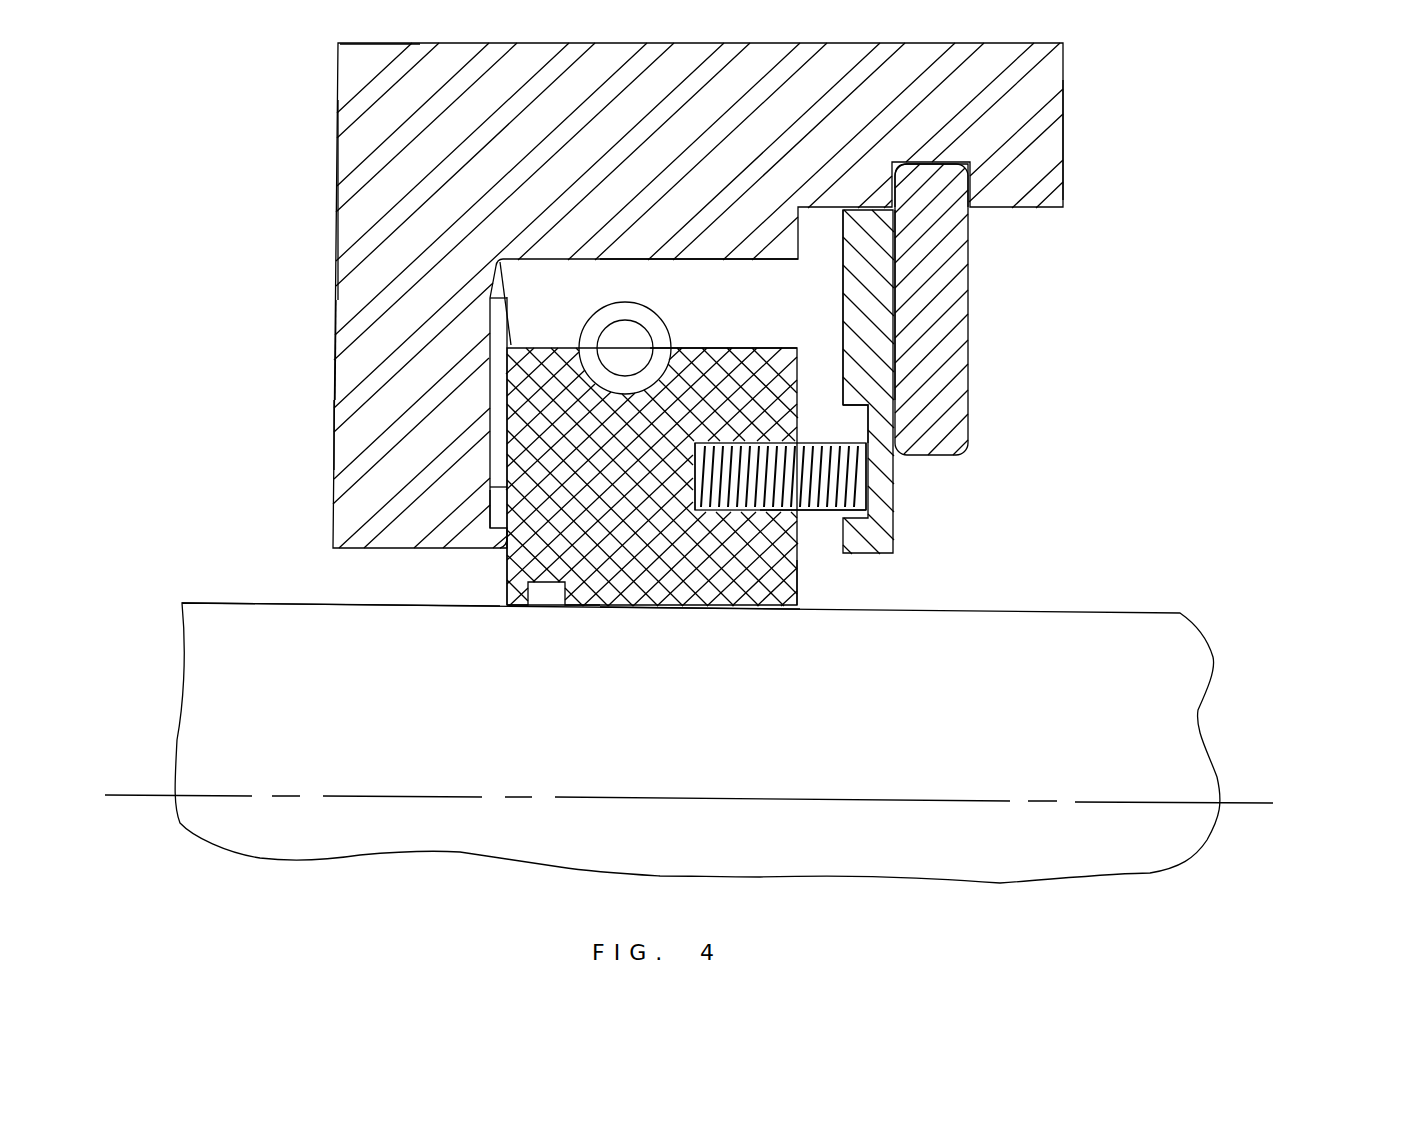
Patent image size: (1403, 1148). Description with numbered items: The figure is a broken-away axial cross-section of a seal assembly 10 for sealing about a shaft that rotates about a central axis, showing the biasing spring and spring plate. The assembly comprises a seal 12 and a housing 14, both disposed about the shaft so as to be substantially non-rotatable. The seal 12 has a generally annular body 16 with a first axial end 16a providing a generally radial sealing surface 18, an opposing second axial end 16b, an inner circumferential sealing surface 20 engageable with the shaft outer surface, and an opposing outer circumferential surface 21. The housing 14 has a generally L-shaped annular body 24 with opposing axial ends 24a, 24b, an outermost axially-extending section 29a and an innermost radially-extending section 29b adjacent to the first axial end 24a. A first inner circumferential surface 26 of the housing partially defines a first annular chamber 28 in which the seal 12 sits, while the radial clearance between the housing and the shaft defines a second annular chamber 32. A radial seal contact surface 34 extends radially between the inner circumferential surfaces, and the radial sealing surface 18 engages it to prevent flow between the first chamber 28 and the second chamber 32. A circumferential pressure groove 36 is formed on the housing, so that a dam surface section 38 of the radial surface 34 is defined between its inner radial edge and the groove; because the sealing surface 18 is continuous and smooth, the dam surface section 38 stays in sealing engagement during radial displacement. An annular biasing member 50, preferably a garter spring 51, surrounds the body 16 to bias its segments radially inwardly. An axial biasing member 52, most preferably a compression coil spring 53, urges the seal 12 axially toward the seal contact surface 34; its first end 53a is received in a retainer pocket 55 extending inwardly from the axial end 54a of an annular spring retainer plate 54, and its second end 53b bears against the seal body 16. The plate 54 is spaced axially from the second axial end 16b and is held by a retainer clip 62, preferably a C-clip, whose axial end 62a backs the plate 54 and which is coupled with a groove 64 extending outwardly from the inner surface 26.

The seal assembly 10 is at (1102, 395).
The seal 12 is at (693, 680).
The housing 14 is at (258, 193).
The annular body 16 is at (759, 344).
The first axial end 16a is at (506, 603).
The second axial end 16b is at (799, 600).
The radial sealing surface 18 is at (507, 487).
The sealing surface 20 is at (727, 609).
The outer circumferential surface 21 is at (710, 342).
The annular body 24 is at (330, 282).
The first axial end 24a is at (335, 343).
The second axial end 24b is at (1064, 133).
The first inner circumferential surface 26 is at (692, 257).
The first annular chamber 28 is at (602, 275).
The outermost axially-extending section 29a is at (372, 88).
The innermost radially-extending section 29b is at (367, 408).
The second annular chamber 32 is at (403, 584).
The radial seal contact surface 34 is at (504, 437).
The pressure groove 36 is at (490, 505).
The dam surface section 38 is at (507, 542).
The annular biasing member 50 is at (625, 292).
The garter spring 51 is at (646, 322).
The axial biasing member 52 is at (815, 434).
The compression coil spring 53 is at (813, 510).
The first end 53a is at (863, 482).
The second end 53b is at (705, 482).
The spring retainer plate 54 is at (900, 518).
The axial end 54a is at (845, 262).
The retainer pocket 55 is at (866, 434).
The retainer clip 62 is at (978, 307).
The axial end 62a is at (897, 285).
The groove 64 is at (940, 165).